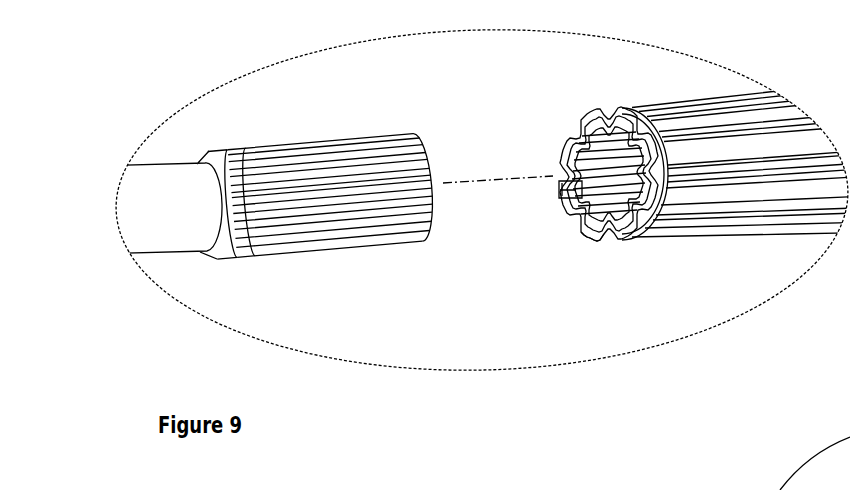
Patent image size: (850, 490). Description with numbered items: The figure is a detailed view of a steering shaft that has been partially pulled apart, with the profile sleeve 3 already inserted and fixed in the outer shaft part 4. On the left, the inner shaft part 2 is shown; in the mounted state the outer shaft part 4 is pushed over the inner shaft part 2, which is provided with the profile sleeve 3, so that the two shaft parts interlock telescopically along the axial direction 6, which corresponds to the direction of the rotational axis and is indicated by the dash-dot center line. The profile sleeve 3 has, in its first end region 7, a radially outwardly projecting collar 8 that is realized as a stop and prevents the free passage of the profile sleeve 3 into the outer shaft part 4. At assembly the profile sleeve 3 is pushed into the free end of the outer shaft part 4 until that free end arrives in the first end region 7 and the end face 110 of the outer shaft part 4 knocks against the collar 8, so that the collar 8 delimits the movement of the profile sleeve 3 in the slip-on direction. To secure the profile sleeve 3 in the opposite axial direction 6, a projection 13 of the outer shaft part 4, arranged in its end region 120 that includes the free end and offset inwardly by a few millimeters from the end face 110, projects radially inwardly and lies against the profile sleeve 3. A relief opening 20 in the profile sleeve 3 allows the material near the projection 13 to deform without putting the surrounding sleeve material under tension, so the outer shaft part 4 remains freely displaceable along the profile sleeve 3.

The inner shaft part 2 is at (287, 146).
The profile sleeve 3 is at (616, 125).
The outer shaft part 4 is at (743, 147).
The axial direction 6 is at (466, 182).
The first end region 7 is at (585, 237).
The collar 8 is at (596, 116).
The projection 13 is at (530, 177).
The relief opening 20 is at (556, 193).
The end face 110 is at (637, 132).
The end region 120 is at (681, 238).